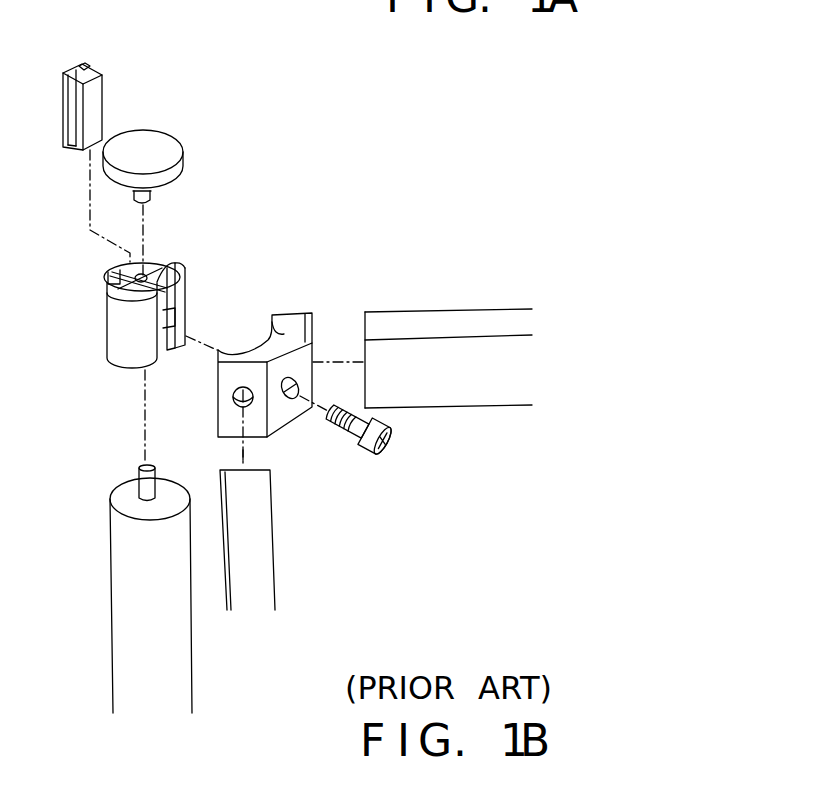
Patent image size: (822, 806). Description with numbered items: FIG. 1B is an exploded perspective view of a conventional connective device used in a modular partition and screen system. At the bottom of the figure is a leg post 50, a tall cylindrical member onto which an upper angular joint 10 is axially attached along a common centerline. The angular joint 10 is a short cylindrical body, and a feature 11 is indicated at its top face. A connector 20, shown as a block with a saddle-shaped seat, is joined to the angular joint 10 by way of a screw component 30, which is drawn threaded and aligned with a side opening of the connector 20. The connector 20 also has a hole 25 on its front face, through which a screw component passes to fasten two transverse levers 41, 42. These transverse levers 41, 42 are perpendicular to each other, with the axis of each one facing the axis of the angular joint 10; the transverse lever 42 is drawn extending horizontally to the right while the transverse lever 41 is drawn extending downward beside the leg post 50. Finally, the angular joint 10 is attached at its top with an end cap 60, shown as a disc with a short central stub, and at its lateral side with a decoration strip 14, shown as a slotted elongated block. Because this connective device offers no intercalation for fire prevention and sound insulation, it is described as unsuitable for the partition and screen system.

The angular joint 10 is at (105, 342).
The holder socket hub 11 is at (121, 291).
The decoration strip 14 is at (79, 64).
The connector 20 is at (275, 328).
The hole 25 is at (233, 400).
The screw component 30 is at (357, 432).
The transverse lever 41 is at (275, 543).
The transverse lever 42 is at (402, 310).
The leg post 50 is at (110, 610).
The end cap 60 is at (173, 134).